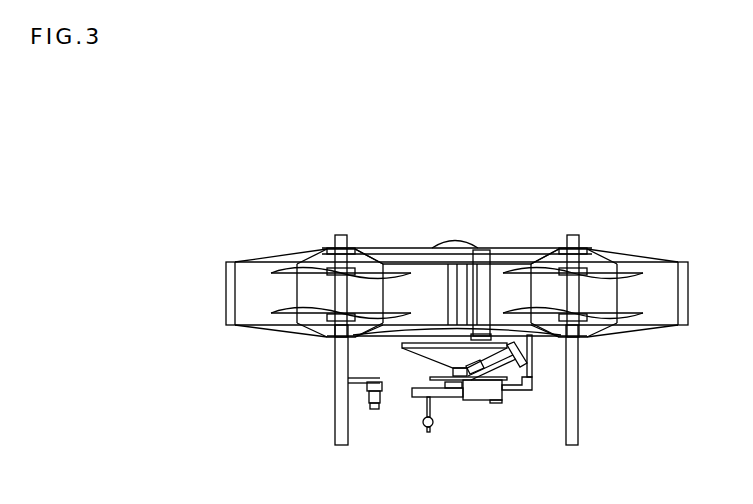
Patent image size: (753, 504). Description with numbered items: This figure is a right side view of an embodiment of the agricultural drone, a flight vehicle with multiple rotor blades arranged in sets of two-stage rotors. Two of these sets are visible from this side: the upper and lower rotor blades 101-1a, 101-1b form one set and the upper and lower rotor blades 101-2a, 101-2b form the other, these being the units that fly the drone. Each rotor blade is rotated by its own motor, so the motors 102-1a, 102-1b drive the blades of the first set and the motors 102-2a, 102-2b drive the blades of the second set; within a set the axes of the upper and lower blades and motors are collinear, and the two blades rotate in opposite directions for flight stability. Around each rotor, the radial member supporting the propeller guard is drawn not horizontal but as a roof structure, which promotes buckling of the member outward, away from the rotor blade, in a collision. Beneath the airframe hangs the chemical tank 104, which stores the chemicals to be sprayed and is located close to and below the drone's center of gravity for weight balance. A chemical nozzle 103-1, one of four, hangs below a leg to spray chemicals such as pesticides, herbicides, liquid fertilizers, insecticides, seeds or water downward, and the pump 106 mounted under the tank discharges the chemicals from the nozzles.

The rotor blade 101-1a is at (632, 268).
The rotor blade 101-1b is at (636, 331).
The rotor blade 101-2a is at (277, 268).
The rotor blade 101-2b is at (277, 331).
The motor 102-1a is at (556, 270).
The motor 102-1b is at (586, 312).
The motor 102-2a is at (356, 270).
The motor 102-2b is at (328, 312).
The chemical nozzle 103-1 is at (372, 410).
The chemical tank 104 is at (424, 358).
The pump 106 is at (475, 402).